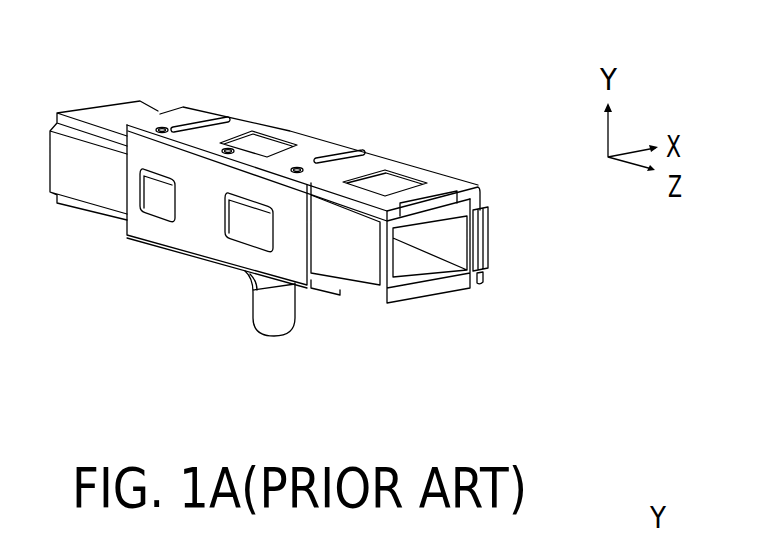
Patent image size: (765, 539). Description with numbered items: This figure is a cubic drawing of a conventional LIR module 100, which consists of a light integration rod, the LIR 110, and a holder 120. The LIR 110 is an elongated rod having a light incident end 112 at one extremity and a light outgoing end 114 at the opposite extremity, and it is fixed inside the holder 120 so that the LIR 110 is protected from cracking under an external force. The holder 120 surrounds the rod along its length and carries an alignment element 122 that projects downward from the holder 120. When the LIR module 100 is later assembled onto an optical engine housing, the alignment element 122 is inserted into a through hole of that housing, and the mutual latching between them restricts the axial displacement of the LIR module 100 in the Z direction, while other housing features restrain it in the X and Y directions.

The LIR module 100 is at (304, 215).
The LIR 110 is at (150, 101).
The light incident end 112 is at (92, 104).
The light outgoing end 114 is at (494, 239).
The holder 120 is at (435, 178).
The alignment element 122 is at (273, 327).